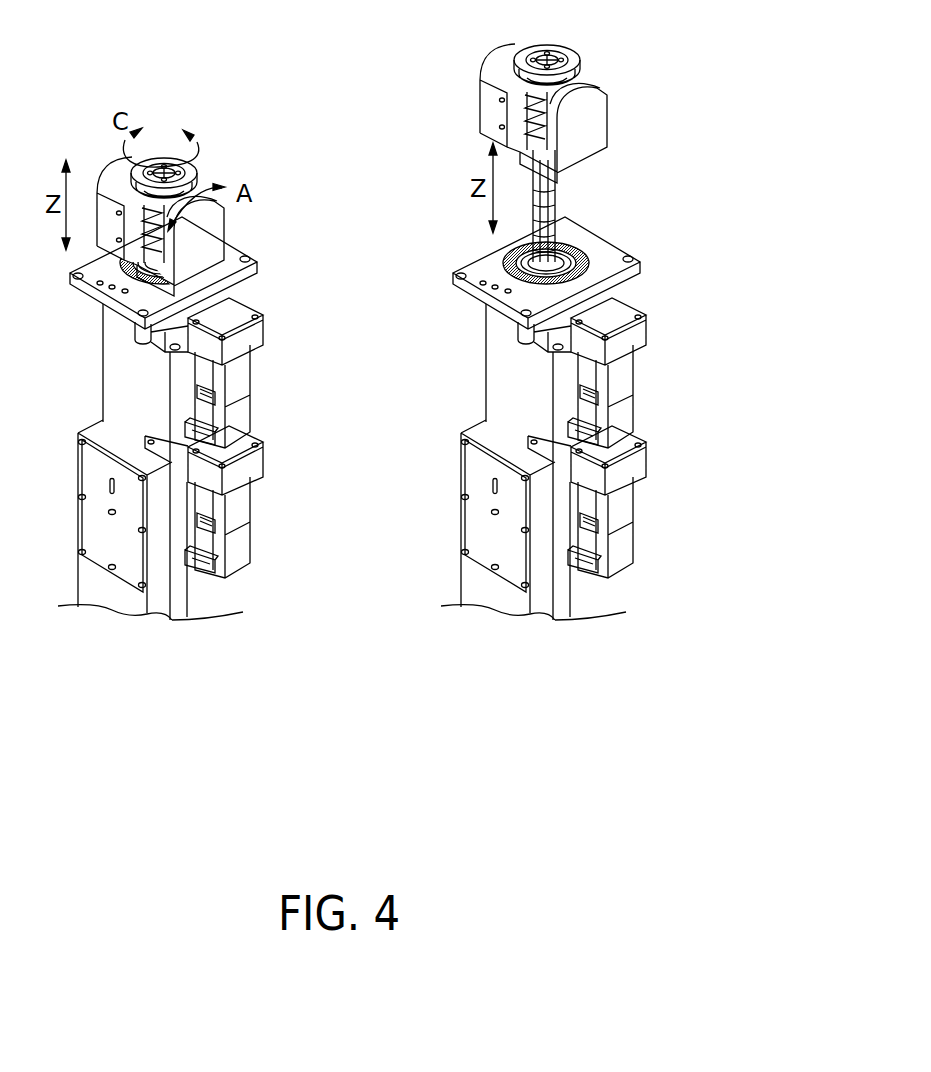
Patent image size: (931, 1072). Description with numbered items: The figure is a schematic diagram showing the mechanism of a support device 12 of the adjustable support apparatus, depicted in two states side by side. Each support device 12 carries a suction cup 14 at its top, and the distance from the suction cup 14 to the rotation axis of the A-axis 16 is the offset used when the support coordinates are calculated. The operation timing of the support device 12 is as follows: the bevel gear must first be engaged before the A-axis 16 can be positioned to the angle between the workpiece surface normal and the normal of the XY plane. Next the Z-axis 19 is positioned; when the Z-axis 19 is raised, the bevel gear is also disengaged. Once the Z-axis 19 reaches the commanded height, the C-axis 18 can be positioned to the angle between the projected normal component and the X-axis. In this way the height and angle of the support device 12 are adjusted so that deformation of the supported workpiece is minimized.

The support device 12 is at (195, 82).
The suction cup 14 is at (548, 56).
The A-axis 16 is at (212, 229).
The C-axis 18 is at (178, 172).
The Z-axis 19 is at (555, 200).